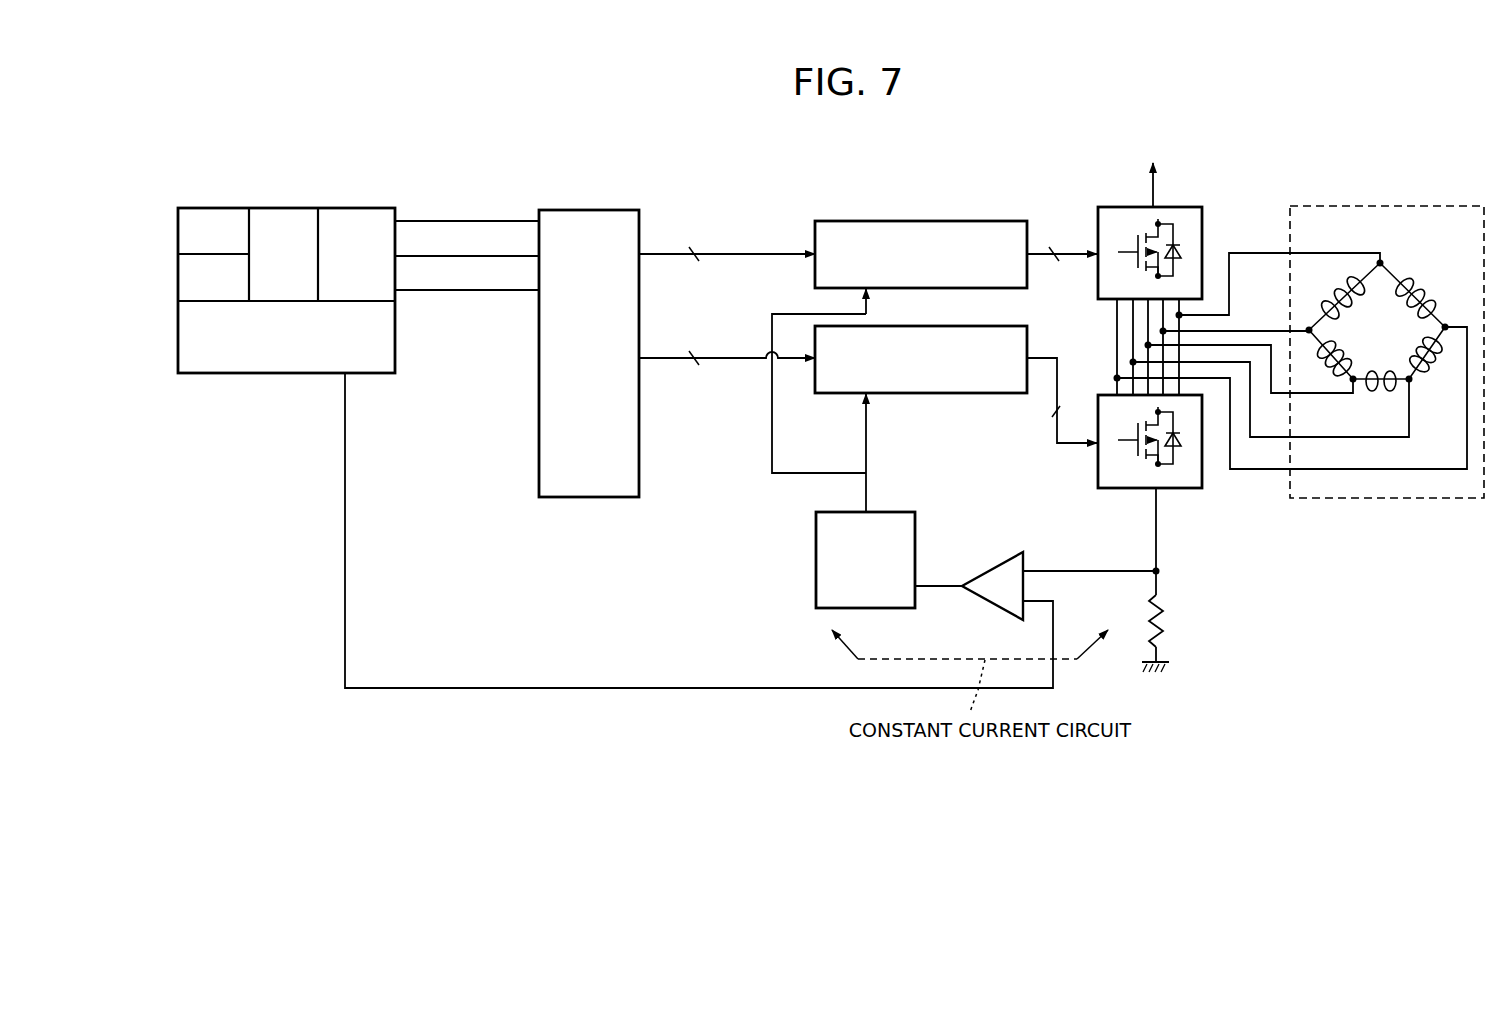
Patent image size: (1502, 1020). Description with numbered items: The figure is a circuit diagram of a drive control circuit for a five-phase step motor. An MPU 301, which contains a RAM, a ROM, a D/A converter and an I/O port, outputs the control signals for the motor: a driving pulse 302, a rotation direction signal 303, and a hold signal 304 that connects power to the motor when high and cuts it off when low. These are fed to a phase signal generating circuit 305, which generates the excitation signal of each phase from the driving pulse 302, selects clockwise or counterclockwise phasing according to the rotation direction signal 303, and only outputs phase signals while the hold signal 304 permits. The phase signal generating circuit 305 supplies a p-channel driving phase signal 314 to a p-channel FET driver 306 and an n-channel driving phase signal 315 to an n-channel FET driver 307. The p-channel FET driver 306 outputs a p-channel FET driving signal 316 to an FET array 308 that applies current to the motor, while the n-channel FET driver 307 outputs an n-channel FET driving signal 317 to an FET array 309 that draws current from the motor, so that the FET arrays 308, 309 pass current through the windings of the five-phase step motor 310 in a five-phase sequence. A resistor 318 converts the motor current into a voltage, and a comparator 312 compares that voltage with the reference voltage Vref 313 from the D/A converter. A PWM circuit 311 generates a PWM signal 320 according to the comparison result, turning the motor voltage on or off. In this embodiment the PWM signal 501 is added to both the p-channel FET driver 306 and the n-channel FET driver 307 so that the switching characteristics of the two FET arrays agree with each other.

The MPU 301 is at (298, 208).
The driving pulse 302 is at (450, 196).
The rotation direction signal 303 is at (487, 220).
The hold signal 304 is at (444, 293).
The phase signal generating circuit 305 is at (594, 210).
The p-channel FET driver 306 is at (912, 221).
The n-channel FET driver 307 is at (928, 395).
The FET array 308 is at (1187, 206).
The FET array 309 is at (1190, 489).
The five-phase step motor 310 is at (1386, 206).
The PWM circuit 311 is at (918, 540).
The comparator 312 is at (990, 608).
The reference voltage Vref 313 is at (752, 660).
The p-channel driving phase signal 314 is at (697, 225).
The n-channel driving phase signal 315 is at (707, 368).
The p-channel FET driving signal 316 is at (1054, 226).
The n-channel FET driving signal 317 is at (1048, 425).
The resistor 318 is at (1168, 618).
The PWM signal 320 is at (862, 446).
The PWM signal 501 is at (768, 450).